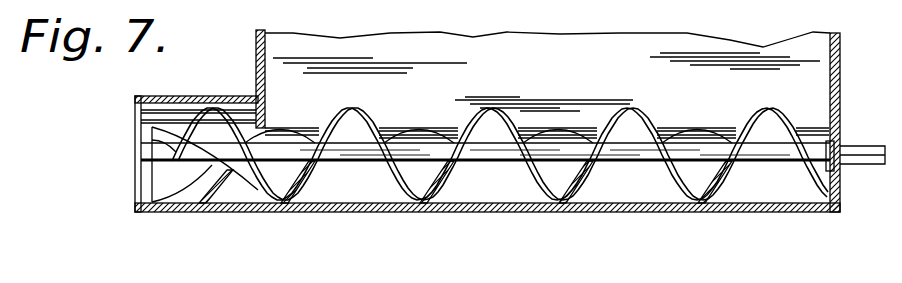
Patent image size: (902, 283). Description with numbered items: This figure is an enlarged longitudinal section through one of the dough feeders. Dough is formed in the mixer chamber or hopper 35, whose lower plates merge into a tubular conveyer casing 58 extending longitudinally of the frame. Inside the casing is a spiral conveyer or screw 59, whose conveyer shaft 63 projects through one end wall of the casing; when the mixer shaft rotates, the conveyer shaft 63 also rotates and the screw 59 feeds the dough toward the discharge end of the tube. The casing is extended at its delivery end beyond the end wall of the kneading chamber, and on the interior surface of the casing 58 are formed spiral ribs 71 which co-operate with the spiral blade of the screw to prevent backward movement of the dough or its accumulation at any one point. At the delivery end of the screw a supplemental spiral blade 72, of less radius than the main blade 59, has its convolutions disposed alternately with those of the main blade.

The mixer chamber or hopper 35 is at (266, 50).
The tubular conveyer casing 58 is at (752, 210).
The spiral conveyer or screw 59 is at (662, 126).
The conveyer shaft 63 is at (567, 152).
The spiral rib 71 is at (205, 210).
The supplemental spiral blade 72 is at (292, 127).